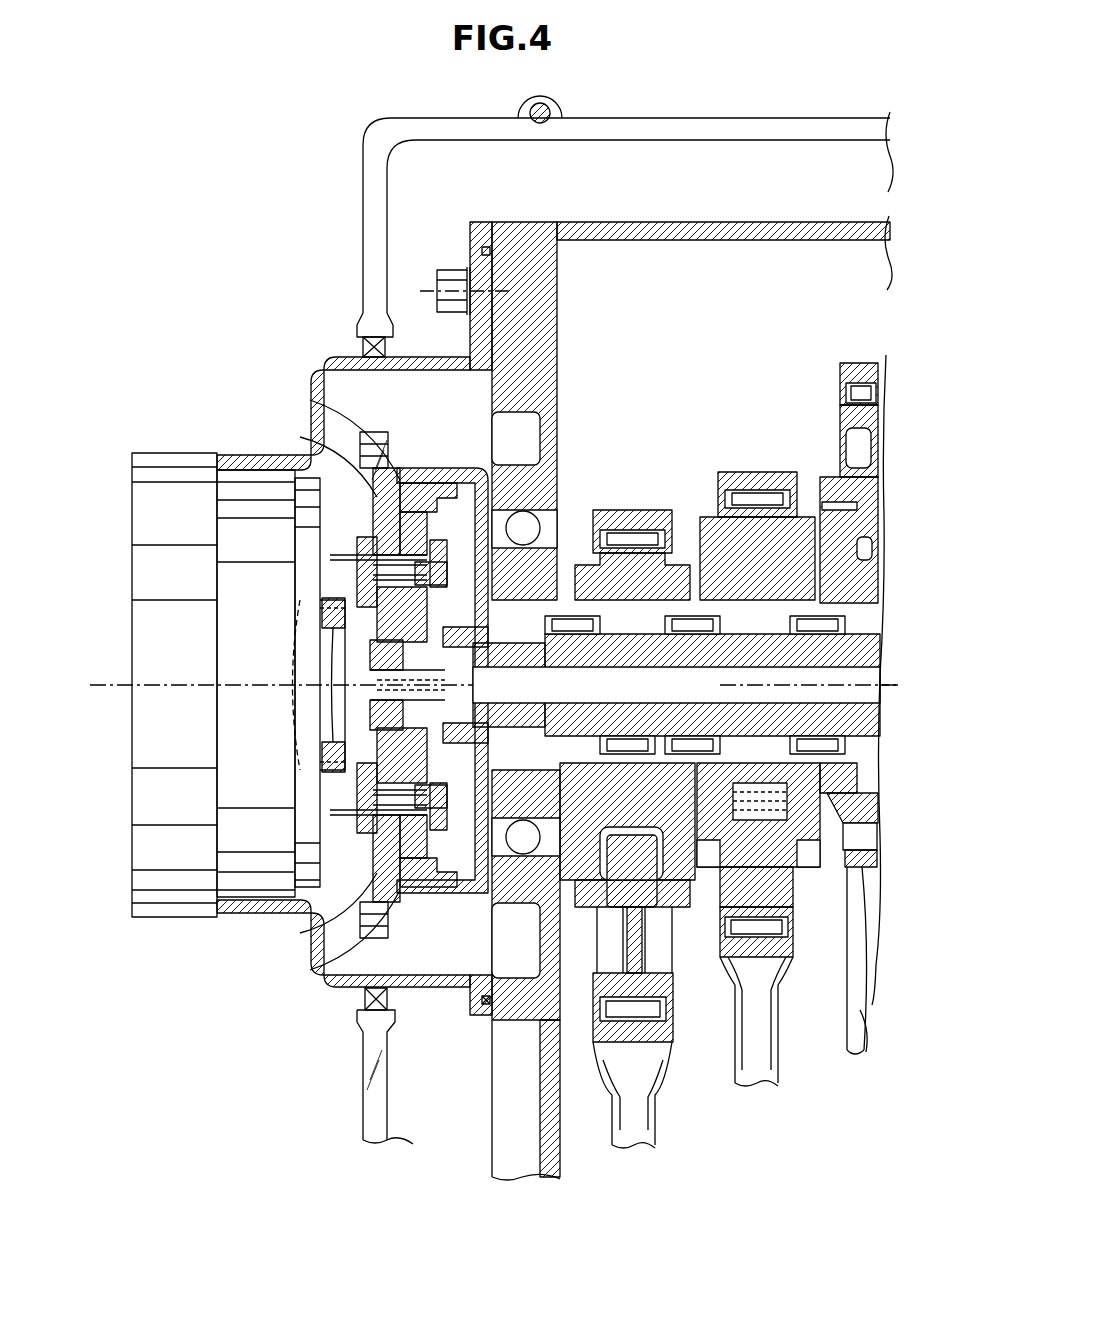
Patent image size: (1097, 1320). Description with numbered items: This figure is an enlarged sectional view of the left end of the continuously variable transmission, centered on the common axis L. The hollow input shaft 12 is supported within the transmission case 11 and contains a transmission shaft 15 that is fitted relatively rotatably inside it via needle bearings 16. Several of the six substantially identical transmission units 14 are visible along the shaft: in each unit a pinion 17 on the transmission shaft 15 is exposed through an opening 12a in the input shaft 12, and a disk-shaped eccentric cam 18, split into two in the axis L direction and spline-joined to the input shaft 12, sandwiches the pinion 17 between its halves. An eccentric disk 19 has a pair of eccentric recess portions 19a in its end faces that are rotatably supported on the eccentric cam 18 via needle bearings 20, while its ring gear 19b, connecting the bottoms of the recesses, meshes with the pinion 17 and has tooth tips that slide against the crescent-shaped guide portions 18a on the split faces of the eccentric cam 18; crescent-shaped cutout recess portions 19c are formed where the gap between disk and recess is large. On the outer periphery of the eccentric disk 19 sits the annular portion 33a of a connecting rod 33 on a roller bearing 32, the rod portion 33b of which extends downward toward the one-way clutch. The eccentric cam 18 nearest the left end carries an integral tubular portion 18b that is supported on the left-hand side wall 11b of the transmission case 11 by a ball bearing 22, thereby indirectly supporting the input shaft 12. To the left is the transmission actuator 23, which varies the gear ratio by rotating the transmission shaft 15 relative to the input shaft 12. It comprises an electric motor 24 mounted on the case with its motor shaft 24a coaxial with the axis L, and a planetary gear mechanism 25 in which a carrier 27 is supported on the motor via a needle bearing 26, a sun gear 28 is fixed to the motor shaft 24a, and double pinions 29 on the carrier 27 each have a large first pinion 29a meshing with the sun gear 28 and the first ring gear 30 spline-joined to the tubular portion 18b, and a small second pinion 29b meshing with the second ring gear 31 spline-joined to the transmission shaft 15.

The axis L is at (100, 712).
The transmission case 11 is at (806, 214).
The left-hand side wall 11b is at (555, 360).
The input shaft 12 is at (872, 580).
The opening 12a is at (810, 685).
The transmission unit 14 is at (656, 508).
The transmission shaft 15 is at (878, 705).
The needle bearing 16 is at (652, 618).
The pinion 17 is at (845, 624).
The eccentric cam 18 is at (676, 697).
The guide portion 18a is at (685, 760).
The tubular portion 18b is at (676, 685).
The eccentric disk 19 is at (835, 418).
The eccentric recess portion 19a is at (822, 503).
The ring gear 19b is at (832, 618).
The cutout recess portion 19c is at (876, 435).
The needle bearing 20 is at (798, 850).
The ball bearing 22 is at (470, 870).
The transmission actuator 23 is at (243, 415).
The electric motor 24 is at (176, 453).
The motor shaft 24a is at (345, 652).
The planetary gear mechanism 25 is at (399, 905).
The needle bearing 26 is at (352, 770).
The carrier 27 is at (368, 825).
The sun gear 28 is at (407, 685).
The double pinion 29 is at (240, 581).
The first pinion 29a is at (413, 530).
The second pinion 29b is at (405, 557).
The first ring gear 30 is at (375, 510).
The second ring gear 31 is at (428, 500).
The roller bearing 32 is at (660, 532).
The connecting rod 33 is at (858, 991).
The annular portion 33a is at (612, 512).
The rod portion 33b is at (866, 1020).